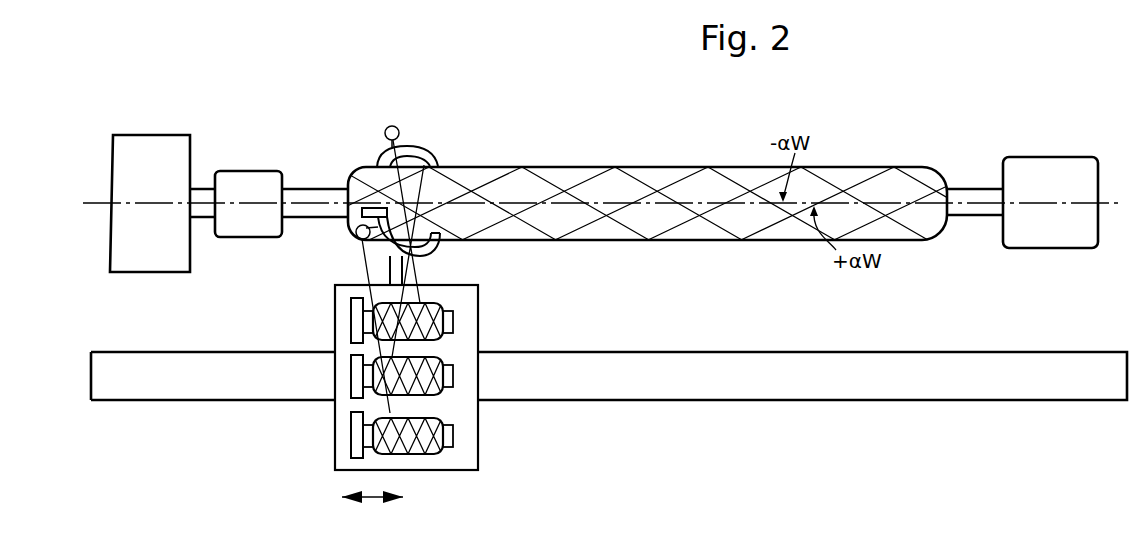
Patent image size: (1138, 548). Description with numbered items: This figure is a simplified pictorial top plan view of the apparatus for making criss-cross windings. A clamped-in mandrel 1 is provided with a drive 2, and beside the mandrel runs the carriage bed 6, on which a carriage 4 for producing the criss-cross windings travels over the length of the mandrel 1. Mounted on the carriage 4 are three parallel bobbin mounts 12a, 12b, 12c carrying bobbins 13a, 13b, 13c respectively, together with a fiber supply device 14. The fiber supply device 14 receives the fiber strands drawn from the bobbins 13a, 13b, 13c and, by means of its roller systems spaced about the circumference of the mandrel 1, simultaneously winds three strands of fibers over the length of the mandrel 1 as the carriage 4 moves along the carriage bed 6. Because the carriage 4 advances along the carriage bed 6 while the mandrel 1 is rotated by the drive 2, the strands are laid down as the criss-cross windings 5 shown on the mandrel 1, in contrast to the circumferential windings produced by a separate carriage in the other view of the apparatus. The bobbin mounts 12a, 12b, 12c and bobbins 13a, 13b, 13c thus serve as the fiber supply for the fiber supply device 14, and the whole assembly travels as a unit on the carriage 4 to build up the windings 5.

The mandrel 1 is at (849, 180).
The drive 2 is at (173, 259).
The carriage 4 is at (470, 432).
The helical winding 5 is at (615, 200).
The carriage bed 6 is at (815, 382).
The bobbin mount 12a is at (357, 433).
The bobbin mount 12b is at (360, 373).
The bobbin mount 12c is at (355, 316).
The bobbin 13a is at (415, 438).
The bobbin 13b is at (438, 357).
The bobbin 13c is at (438, 303).
The fiber supply device 14 is at (390, 272).